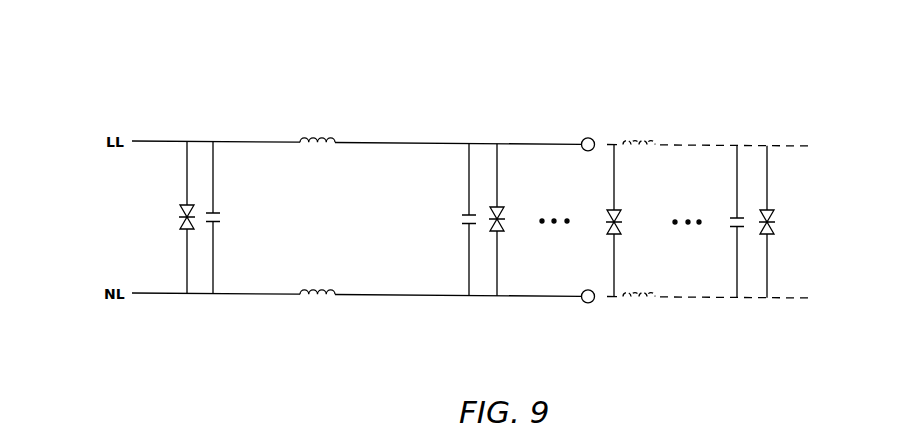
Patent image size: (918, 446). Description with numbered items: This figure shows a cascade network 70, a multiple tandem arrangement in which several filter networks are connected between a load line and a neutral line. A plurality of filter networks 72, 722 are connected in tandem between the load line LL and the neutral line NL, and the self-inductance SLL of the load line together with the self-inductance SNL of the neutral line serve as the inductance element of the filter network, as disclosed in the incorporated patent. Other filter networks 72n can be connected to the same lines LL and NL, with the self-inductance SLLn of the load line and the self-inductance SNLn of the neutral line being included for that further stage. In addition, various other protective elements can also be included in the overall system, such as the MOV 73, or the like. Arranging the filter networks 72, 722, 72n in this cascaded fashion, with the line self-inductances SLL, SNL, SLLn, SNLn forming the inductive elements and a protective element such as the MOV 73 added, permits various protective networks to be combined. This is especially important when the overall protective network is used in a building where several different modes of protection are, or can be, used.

The cascade network 70 is at (433, 106).
The filter network 72 is at (232, 192).
The filter network 722 is at (528, 201).
The filter network 72n is at (790, 196).
The MOV 73 is at (630, 204).
The self-inductance SLL is at (339, 119).
The self-inductance SNL is at (330, 265).
The self-inductance SLLn is at (660, 118).
The self-inductance SNLn is at (662, 281).